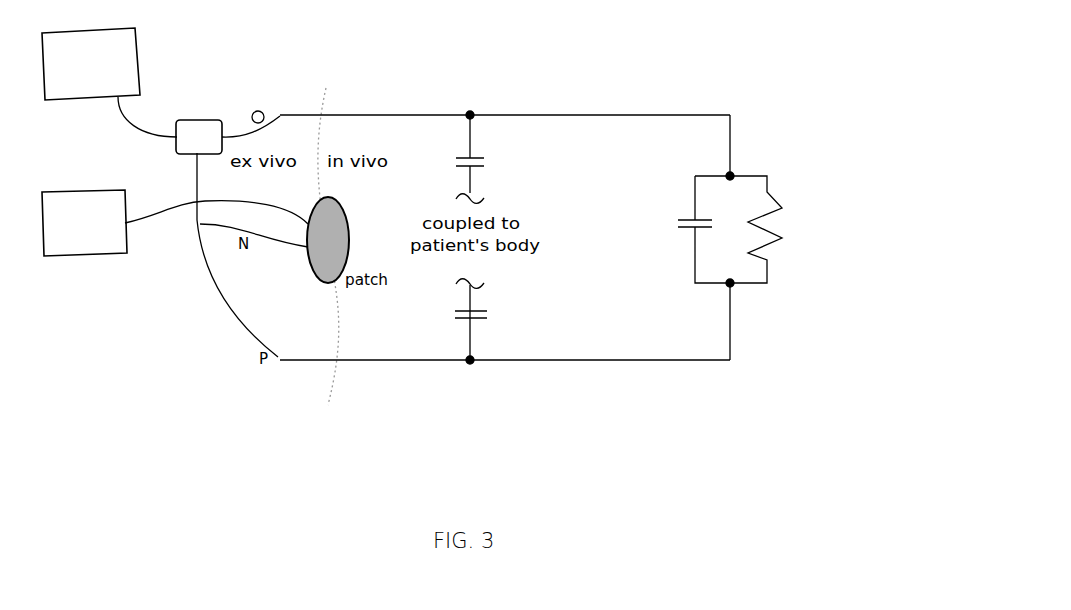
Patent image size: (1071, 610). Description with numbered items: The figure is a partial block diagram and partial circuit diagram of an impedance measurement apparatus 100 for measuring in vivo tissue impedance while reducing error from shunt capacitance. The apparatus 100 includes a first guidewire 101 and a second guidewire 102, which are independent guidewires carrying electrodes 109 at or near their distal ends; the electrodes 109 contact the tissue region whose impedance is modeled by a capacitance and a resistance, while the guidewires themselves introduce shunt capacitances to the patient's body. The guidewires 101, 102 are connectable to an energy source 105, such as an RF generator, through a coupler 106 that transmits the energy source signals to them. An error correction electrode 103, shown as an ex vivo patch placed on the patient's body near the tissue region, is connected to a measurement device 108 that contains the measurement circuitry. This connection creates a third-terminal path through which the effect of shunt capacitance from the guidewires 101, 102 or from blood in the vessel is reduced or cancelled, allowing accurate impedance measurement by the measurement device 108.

The impedance measurement apparatus 100 is at (745, 33).
The first guidewire 101 is at (560, 90).
The second guidewire 102 is at (503, 388).
The error correction electrode 103 is at (200, 224).
The energy source 105 is at (109, 82).
The coupler 106 is at (199, 137).
The measurement device 108 is at (84, 223).
The electrodes 109 is at (740, 158).